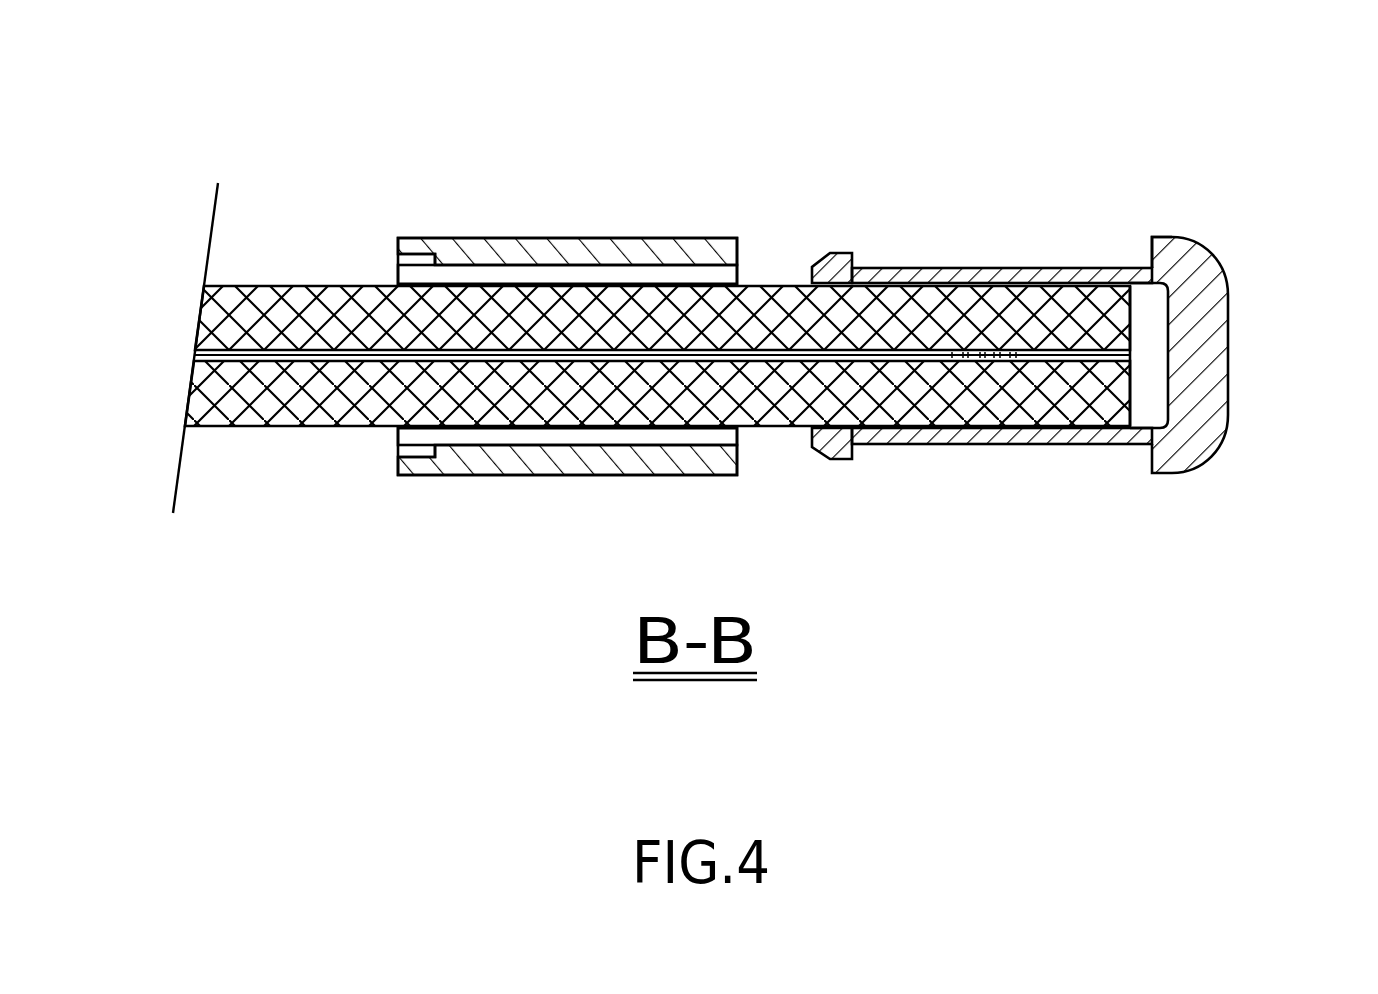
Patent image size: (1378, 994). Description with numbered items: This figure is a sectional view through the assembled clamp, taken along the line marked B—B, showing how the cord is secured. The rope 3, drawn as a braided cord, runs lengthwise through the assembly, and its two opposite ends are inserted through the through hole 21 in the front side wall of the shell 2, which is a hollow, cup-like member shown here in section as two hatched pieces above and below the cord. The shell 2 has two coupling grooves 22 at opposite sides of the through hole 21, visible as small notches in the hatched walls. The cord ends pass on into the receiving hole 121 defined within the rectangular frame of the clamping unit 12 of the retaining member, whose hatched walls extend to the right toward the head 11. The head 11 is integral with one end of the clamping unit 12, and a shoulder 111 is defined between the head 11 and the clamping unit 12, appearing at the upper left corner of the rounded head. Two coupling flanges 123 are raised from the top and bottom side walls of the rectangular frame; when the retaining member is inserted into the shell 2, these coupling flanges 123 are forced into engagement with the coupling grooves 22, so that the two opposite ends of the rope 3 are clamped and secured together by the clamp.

The rope 3 is at (246, 287).
The shell 2 is at (600, 238).
The through hole 21 is at (385, 275).
The coupling grooves 22 is at (418, 253).
The clamping unit 12 is at (1030, 265).
The receiving hole 121 is at (813, 283).
The coupling flanges 123 is at (837, 260).
The head 11 is at (1220, 257).
The shoulder 111 is at (1152, 242).